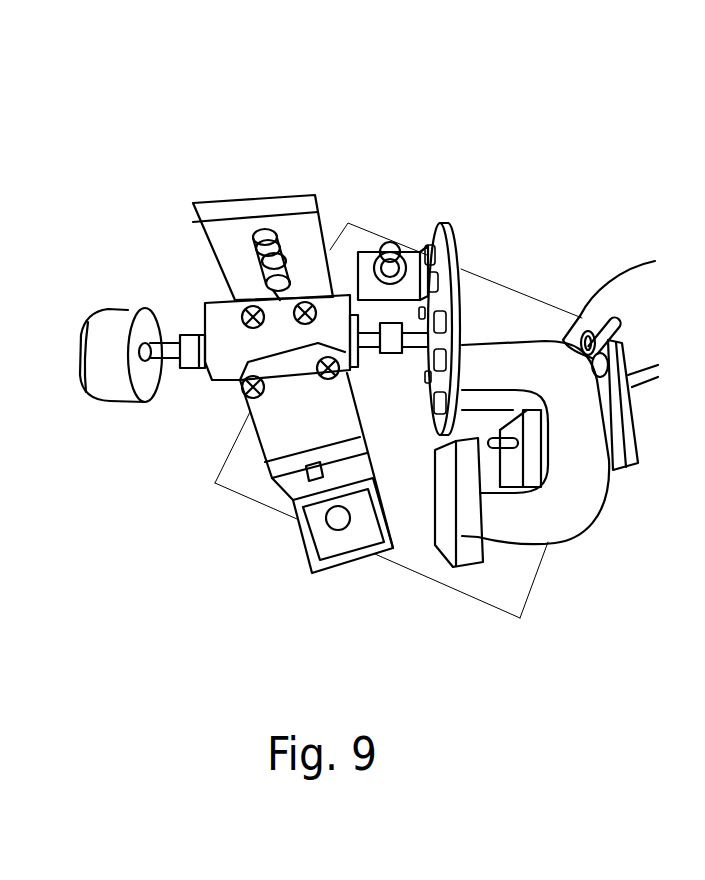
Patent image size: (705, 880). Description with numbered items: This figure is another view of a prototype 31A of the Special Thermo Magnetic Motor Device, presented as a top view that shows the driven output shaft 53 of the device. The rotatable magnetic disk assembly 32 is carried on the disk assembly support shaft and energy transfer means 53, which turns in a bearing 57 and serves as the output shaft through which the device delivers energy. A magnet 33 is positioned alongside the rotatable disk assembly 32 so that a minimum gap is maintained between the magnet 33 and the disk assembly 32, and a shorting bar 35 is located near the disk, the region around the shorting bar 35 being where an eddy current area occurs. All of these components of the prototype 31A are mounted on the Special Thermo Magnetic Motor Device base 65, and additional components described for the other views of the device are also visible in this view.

The prototype of a Special Thermo Magnetic Motor Device 31A is at (552, 646).
The rotatable magnetic disk assembly 32 is at (452, 226).
The magnet 33 is at (583, 498).
The shorting bar 35 is at (473, 540).
The disk assembly support shaft and energy transfer means 53 is at (128, 318).
The bearing 57 is at (330, 298).
The Special Thermo Magnetic Motor Device base 65 is at (507, 290).